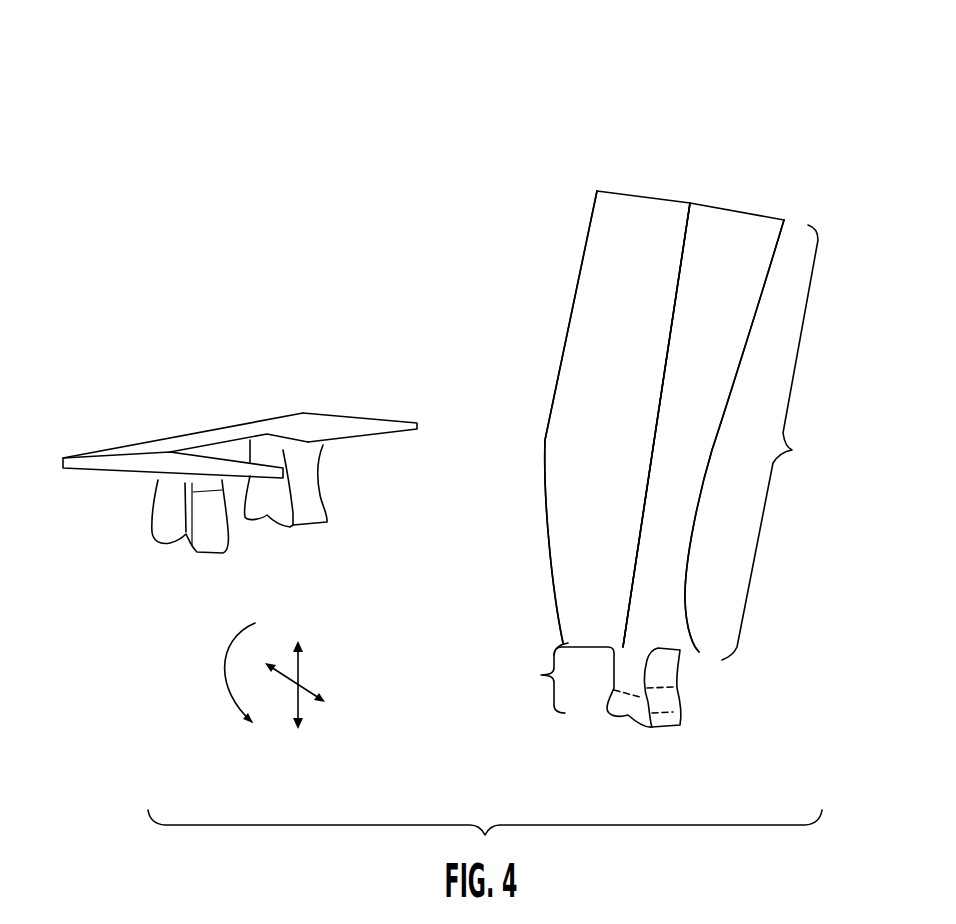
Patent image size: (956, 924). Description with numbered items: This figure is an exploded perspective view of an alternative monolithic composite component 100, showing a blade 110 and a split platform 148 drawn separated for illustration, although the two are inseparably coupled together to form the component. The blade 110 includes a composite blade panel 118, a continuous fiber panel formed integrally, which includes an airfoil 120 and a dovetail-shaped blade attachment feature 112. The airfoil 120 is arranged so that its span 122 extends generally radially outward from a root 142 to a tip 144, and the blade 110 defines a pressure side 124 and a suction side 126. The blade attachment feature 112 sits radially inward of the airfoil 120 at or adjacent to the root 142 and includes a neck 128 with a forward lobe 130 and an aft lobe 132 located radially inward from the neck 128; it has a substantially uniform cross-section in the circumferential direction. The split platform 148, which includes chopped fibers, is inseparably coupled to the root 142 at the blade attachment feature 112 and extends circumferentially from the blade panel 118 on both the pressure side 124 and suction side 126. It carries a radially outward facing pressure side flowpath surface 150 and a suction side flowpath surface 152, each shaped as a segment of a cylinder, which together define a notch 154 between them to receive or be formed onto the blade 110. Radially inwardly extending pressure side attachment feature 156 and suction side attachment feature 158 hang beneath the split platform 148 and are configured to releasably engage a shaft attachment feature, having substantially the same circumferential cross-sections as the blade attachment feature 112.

The monolithic composite component 100 is at (385, 137).
The blade 110 is at (605, 127).
The blade attachment feature 112 is at (576, 685).
The composite blade panel 118 is at (582, 252).
The airfoil 120 is at (779, 442).
The span 122 is at (657, 420).
The pressure side 124 is at (563, 395).
The suction side 126 is at (724, 493).
The neck 128 is at (660, 668).
The forward lobe 130 is at (663, 704).
The aft lobe 132 is at (606, 700).
The root 142 is at (527, 643).
The tip 144 is at (712, 207).
The split platform 148 is at (170, 380).
The pressure side flowpath surface 150 is at (108, 458).
The suction side flowpath surface 152 is at (327, 423).
The notch 154 is at (243, 437).
The pressure side attachment feature 156 is at (175, 520).
The suction side attachment feature 158 is at (313, 497).